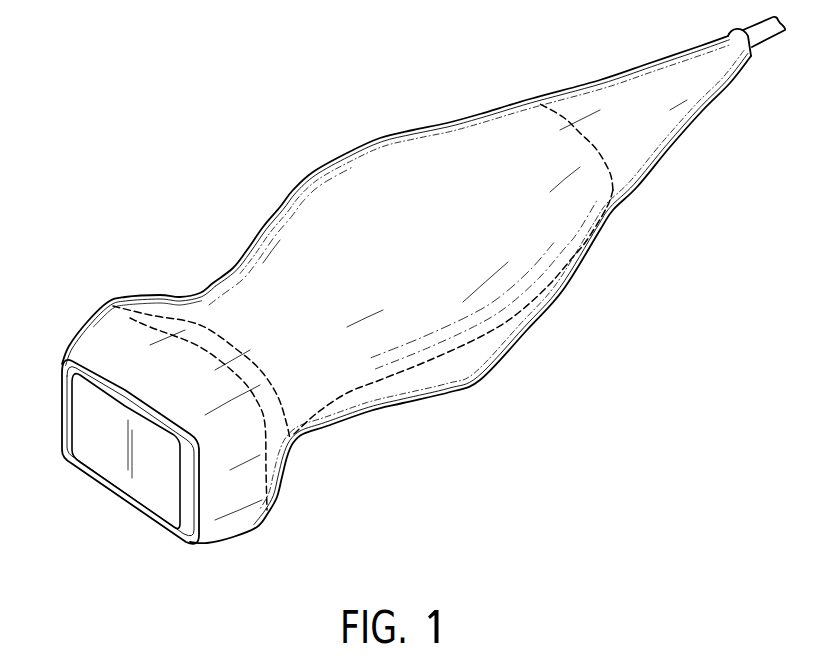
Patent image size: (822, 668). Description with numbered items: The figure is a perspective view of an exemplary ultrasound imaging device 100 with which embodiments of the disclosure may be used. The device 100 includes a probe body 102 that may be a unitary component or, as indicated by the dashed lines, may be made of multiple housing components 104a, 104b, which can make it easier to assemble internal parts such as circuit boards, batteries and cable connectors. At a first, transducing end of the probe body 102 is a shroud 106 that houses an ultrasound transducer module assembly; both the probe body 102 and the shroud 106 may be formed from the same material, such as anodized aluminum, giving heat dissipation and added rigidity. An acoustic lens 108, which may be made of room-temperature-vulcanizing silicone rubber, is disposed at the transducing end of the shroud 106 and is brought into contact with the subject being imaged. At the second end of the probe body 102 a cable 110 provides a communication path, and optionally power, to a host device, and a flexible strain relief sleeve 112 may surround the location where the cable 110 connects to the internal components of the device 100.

The ultrasound imaging device 100 is at (83, 194).
The probe body 102 is at (352, 168).
The housing component 104a is at (236, 278).
The housing component 104b is at (452, 385).
The shroud 106 is at (107, 318).
The acoustic lens 108 is at (88, 435).
The cable 110 is at (762, 30).
The strain relief sleeve 112 is at (621, 94).